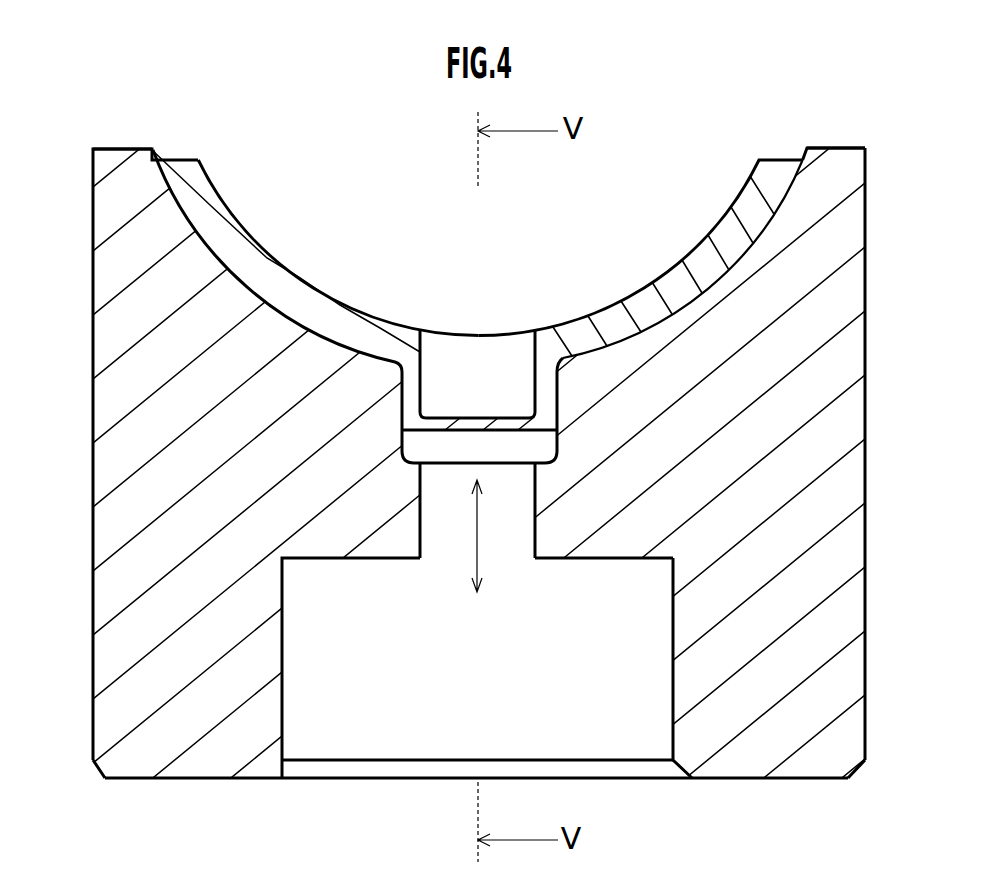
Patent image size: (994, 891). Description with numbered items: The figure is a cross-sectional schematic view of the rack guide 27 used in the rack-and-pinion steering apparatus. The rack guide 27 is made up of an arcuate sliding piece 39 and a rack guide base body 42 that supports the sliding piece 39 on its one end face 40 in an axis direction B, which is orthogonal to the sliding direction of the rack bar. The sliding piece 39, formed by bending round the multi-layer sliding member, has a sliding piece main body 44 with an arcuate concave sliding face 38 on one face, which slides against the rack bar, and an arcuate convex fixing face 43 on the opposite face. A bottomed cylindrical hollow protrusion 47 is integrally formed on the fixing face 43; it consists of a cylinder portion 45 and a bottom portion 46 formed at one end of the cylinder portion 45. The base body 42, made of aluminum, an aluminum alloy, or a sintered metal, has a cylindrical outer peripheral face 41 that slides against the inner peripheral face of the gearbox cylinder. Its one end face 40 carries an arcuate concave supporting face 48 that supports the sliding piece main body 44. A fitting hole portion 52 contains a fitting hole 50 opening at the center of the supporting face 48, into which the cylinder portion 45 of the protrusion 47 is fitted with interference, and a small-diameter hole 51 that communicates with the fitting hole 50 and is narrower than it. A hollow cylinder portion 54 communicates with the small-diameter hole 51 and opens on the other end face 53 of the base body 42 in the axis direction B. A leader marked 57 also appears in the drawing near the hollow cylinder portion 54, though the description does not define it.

The rack guide 27 is at (870, 203).
The arcuate concave sliding face 38 is at (223, 203).
The arcuate sliding piece 39 is at (287, 295).
The one end face 40 is at (120, 148).
The cylindrical outer peripheral face 41 is at (866, 233).
The rack guide base body 42 is at (848, 292).
The arcuate convex fixing face 43 is at (677, 316).
The sliding piece main body 44 is at (738, 230).
The cylinder portion 45 is at (544, 382).
The bottom portion 46 is at (422, 432).
The bottomed cylindrical hollow protrusion 47 is at (398, 384).
The arcuate concave supporting face 48 is at (708, 288).
The fitting hole 50 is at (401, 442).
The small-diameter hole 51 is at (455, 548).
The fitting hole portion 52 is at (560, 408).
The other end face 53 is at (210, 779).
The hollow cylinder portion 54 is at (328, 759).
The cavity wall 57 is at (650, 560).
The axis direction B is at (478, 536).